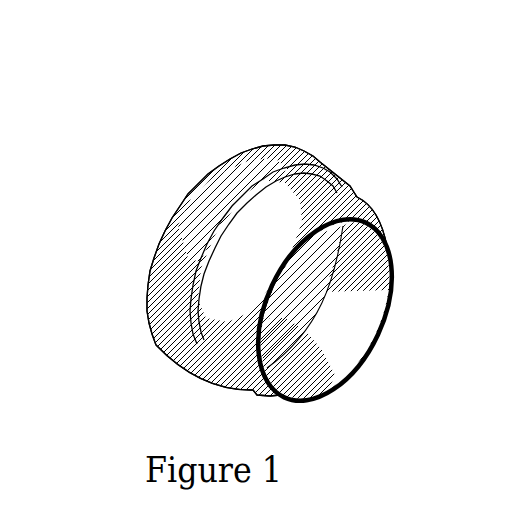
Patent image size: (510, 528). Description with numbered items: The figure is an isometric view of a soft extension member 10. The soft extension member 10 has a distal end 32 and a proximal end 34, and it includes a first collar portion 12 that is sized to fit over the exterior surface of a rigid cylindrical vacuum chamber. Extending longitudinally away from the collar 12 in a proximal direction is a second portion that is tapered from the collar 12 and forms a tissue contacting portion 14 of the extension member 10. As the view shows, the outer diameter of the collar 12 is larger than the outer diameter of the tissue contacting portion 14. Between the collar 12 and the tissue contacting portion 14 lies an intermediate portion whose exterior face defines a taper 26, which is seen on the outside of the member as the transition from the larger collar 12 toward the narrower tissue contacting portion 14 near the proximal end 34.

The soft extension member 10 is at (241, 100).
The first collar portion 12 is at (302, 152).
The tissue contacting portion 14 is at (358, 202).
The taper 26 is at (215, 247).
The distal end 32 is at (147, 320).
The proximal end 34 is at (210, 386).